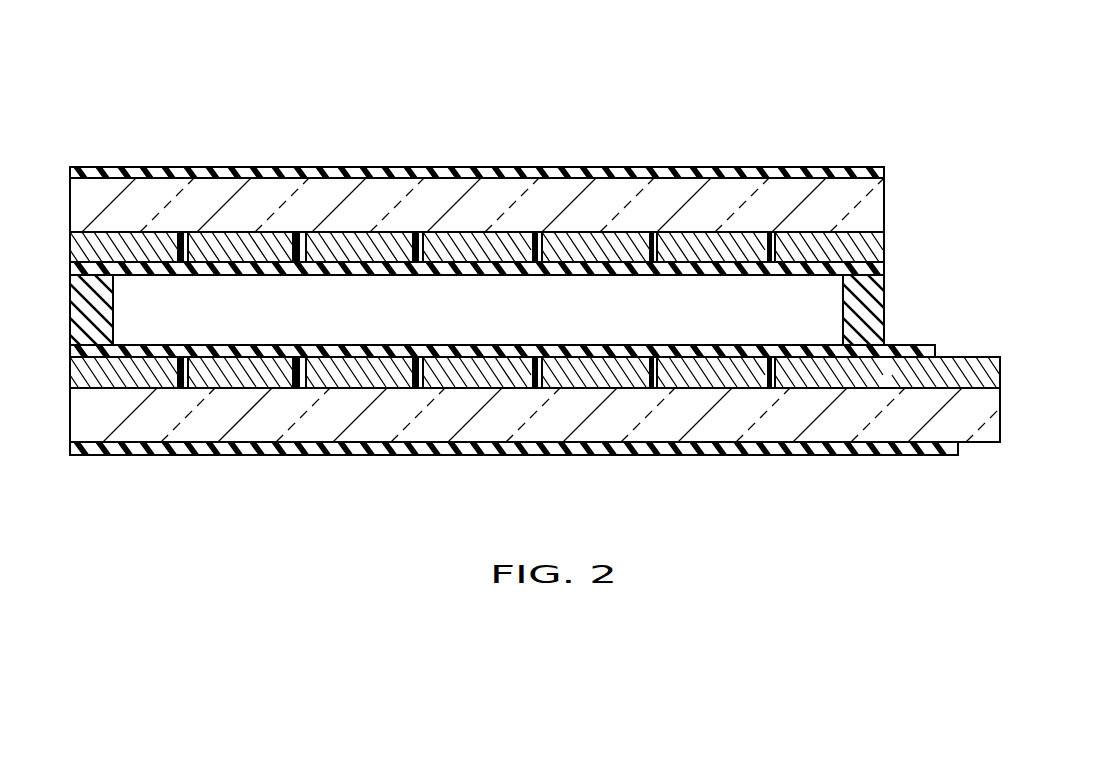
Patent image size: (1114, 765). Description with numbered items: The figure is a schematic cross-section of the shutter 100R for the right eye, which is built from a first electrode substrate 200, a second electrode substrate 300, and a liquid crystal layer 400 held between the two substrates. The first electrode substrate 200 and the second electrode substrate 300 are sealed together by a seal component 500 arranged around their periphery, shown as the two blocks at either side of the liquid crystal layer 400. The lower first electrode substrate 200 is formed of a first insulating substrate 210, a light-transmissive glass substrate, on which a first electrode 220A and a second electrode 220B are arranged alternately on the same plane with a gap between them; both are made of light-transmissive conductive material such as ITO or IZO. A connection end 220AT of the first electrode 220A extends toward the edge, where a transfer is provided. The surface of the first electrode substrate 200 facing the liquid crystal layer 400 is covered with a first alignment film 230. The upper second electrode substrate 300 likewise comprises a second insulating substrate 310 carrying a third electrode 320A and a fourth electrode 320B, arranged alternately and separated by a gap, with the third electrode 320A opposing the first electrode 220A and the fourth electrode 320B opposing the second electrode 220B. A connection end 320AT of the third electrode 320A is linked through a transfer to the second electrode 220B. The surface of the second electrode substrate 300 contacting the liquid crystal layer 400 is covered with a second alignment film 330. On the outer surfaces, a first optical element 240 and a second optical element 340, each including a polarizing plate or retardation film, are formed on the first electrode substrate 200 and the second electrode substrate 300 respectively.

The shutter for right eye 100R is at (140, 96).
The second electrode substrate 300 is at (912, 206).
The second optical element 340 is at (886, 173).
The second insulating substrate 310 is at (860, 195).
The third electrode 320A is at (131, 247).
The fourth electrode 320B is at (247, 247).
The connection end of the third electrode 320AT is at (805, 245).
The second alignment film 330 is at (886, 269).
The seal component 500 is at (886, 296).
The liquid crystal layer 400 is at (832, 325).
The first electrode substrate 200 is at (1020, 393).
The first alignment film 230 is at (937, 349).
The first electrode 220A is at (122, 376).
The second electrode 220B is at (237, 376).
The connection end of the first electrode 220AT is at (828, 380).
The first insulating substrate 210 is at (920, 420).
The first optical element 240 is at (960, 446).